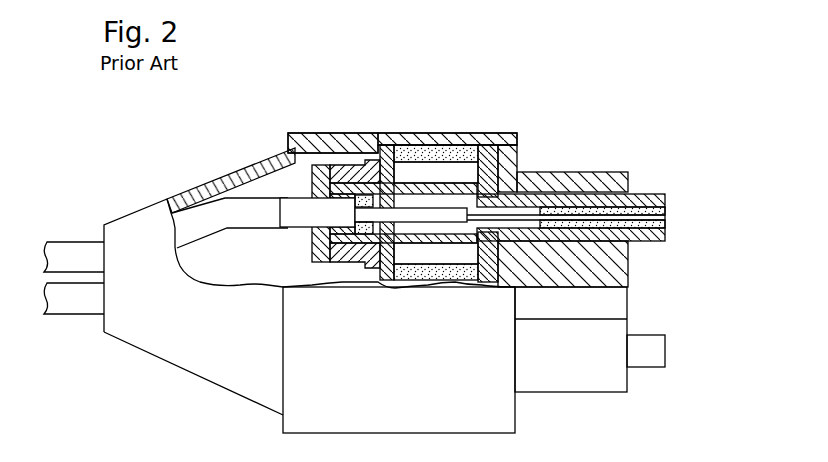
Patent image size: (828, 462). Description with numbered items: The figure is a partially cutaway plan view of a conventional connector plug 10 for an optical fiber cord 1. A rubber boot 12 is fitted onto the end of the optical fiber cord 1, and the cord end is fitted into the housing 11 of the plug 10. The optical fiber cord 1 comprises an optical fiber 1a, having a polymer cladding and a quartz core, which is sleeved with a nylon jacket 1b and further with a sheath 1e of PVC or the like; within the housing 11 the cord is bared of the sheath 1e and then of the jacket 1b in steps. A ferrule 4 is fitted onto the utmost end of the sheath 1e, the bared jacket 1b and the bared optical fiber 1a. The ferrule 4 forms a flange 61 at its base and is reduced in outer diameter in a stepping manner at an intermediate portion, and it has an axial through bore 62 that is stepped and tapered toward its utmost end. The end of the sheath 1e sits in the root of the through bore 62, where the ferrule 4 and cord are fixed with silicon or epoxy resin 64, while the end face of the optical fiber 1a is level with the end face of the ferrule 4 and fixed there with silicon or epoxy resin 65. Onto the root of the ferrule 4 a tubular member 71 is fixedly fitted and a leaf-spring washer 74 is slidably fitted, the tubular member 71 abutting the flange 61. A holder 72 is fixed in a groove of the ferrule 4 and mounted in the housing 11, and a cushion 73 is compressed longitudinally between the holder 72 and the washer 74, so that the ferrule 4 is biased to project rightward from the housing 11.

The optical fiber cord 1 is at (80, 242).
The optical fiber 1a is at (666, 217).
The jacket 1b is at (374, 236).
The sheath 1e is at (247, 213).
The ferrule 4 is at (653, 193).
The plug 10 is at (538, 162).
The housing 11 is at (358, 162).
The rubber boot 12 is at (195, 190).
The flange 61 is at (312, 263).
The through bore 62 is at (416, 203).
The silicon resin or epoxy resin 64 is at (338, 157).
The silicon resin or epoxy resin 65 is at (664, 226).
The tubular member 71 is at (360, 256).
The holder 72 is at (482, 284).
The cushion 73 is at (466, 133).
The washer 74 is at (388, 146).